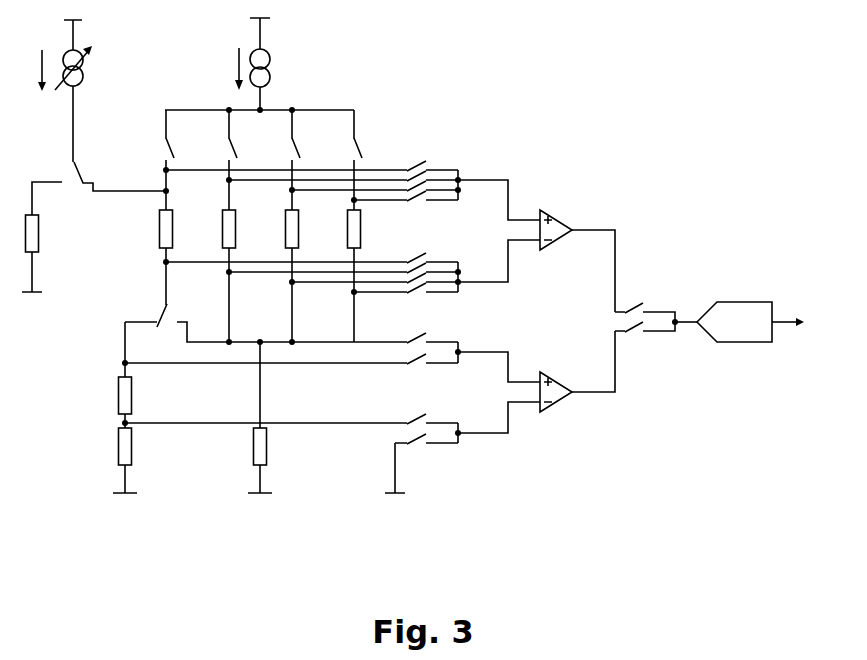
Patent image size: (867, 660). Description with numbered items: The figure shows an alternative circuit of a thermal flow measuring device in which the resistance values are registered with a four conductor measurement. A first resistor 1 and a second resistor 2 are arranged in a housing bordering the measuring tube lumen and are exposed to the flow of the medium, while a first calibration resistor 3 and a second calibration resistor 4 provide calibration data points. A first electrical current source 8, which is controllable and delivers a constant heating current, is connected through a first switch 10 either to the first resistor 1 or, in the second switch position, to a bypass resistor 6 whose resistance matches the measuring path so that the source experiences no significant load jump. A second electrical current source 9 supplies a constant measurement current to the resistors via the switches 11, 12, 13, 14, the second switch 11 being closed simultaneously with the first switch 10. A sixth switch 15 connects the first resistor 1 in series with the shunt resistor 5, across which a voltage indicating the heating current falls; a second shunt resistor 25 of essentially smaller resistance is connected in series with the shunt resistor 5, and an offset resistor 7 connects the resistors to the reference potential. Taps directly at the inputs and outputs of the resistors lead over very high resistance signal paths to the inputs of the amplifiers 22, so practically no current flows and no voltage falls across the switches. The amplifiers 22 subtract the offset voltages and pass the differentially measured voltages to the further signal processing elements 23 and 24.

The first resistor 1 is at (170, 233).
The second resistor 2 is at (233, 233).
The first calibration resistor 3 is at (296, 233).
The second calibration resistor 4 is at (358, 233).
The shunt resistor 5 is at (129, 401).
The bypass resistor 6 is at (36, 231).
The offset resistor 7 is at (264, 449).
The first electrical current source 8 is at (84, 64).
The second electrical current source 9 is at (271, 64).
The first switch 10 is at (86, 168).
The second switch 11 is at (175, 152).
The switch 12 is at (238, 152).
The switch 13 is at (301, 152).
The switch 14 is at (363, 152).
The sixth switch 15 is at (163, 316).
The amplifier 22 is at (554, 228).
The signal processing element 23 is at (752, 305).
The signal processing element 24 is at (829, 328).
The second shunt resistor 25 is at (129, 449).